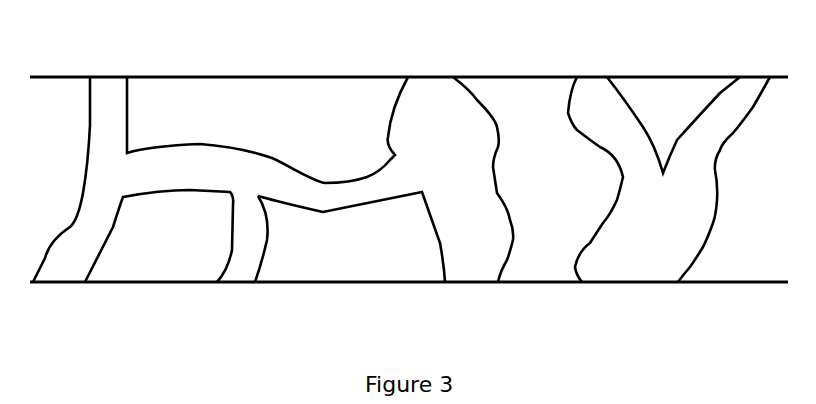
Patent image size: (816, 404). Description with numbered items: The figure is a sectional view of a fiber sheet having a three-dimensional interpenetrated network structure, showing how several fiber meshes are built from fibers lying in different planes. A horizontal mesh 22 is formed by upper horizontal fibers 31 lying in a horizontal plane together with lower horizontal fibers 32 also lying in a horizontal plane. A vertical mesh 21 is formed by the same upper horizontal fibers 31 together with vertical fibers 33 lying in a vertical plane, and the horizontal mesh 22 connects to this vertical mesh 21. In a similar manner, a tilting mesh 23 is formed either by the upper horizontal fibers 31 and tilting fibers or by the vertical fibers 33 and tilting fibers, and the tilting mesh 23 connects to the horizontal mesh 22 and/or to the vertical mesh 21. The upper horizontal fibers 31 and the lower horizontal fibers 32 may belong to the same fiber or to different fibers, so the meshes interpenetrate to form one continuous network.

The vertical mesh 21 is at (90, 223).
The horizontal mesh 22 is at (317, 192).
The tilting mesh 23 is at (687, 203).
The upper horizontal fibers 31 is at (297, 118).
The lower horizontal fibers 32 is at (393, 257).
The vertical fibers 33 is at (532, 173).